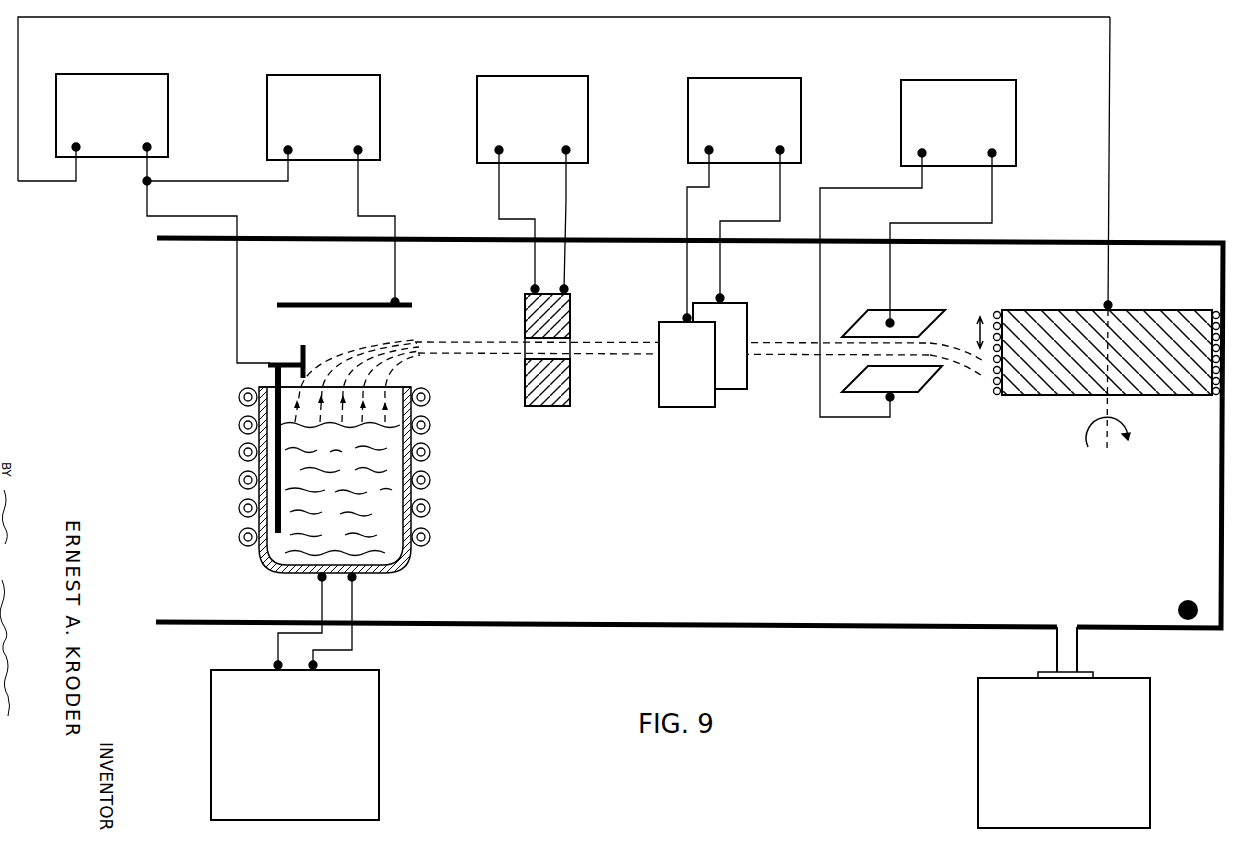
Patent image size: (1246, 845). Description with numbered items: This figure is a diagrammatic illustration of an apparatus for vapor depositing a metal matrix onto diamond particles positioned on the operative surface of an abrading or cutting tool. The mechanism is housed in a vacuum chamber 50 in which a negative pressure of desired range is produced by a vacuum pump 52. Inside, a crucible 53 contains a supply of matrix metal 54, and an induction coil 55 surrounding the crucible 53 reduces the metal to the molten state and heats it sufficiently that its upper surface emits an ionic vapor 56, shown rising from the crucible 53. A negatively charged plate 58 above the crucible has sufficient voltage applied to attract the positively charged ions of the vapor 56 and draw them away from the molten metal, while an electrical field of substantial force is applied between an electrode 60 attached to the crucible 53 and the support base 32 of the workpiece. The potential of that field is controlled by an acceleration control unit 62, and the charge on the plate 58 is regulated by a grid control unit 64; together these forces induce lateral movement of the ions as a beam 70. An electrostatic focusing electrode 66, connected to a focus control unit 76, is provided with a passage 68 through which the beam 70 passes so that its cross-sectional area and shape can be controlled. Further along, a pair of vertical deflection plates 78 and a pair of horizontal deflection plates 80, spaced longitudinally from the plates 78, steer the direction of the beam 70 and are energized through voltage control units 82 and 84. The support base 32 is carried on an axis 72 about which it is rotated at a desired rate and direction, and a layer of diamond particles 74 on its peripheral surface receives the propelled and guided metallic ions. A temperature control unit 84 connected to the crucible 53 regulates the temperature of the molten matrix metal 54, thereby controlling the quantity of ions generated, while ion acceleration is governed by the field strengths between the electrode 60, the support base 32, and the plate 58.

The support base 32 is at (1037, 375).
The vacuum chamber 50 is at (1127, 243).
The vacuum pump 52 is at (988, 725).
The crucible 53 is at (405, 553).
The matrix metal 54 is at (373, 482).
The induction coil 55 is at (430, 423).
The ionic vapor 56 is at (397, 342).
The negatively charged plate 58 is at (317, 303).
The electrode 60 is at (303, 353).
The control unit 62 is at (106, 142).
The grid control unit 64 is at (366, 134).
The electrostatic focusing electrode 66 is at (568, 393).
The passage 68 is at (550, 360).
The beam 70 is at (622, 343).
The axis 72 is at (1107, 276).
The layer of diamond particles 74 is at (997, 310).
The focus control unit 76 is at (574, 143).
The vertical deflection plates 78 is at (737, 367).
The horizontal deflection plates 80 is at (905, 318).
The voltage control unit 82 is at (792, 143).
The voltage control unit / temperature control unit 84 is at (1002, 145).